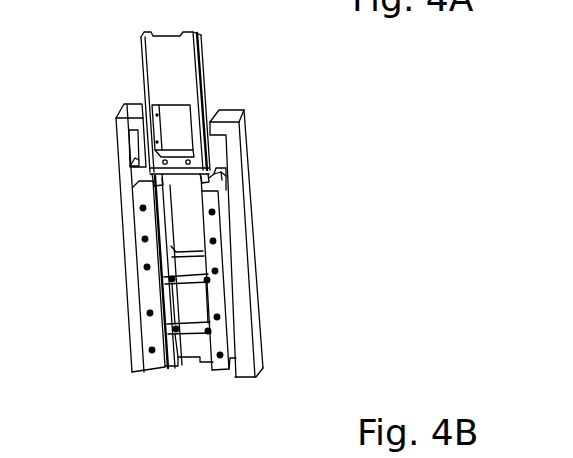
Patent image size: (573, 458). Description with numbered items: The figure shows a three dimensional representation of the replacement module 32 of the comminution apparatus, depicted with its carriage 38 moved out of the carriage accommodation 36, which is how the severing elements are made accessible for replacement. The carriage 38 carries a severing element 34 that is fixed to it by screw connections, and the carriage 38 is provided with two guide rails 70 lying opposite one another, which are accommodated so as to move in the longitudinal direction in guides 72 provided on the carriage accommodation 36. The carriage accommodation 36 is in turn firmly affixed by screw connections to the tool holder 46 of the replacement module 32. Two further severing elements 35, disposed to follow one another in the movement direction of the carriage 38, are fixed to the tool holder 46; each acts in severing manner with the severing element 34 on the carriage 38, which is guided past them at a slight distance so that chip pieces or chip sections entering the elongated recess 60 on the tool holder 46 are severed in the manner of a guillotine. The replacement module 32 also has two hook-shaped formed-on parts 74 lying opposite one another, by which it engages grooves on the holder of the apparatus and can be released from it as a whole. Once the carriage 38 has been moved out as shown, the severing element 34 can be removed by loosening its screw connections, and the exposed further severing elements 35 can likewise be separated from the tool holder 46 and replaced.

The replacement module 32 is at (260, 381).
The severing element 34 is at (172, 106).
The further severing elements 35 is at (198, 280).
The carriage accommodation 36 is at (221, 187).
The carriage 38 is at (207, 0).
The tool holder 46 is at (115, 120).
The elongated recess 60 is at (197, 300).
The guide rails 70 is at (201, 39).
The guides 72 is at (140, 189).
The hook-shaped formed-on parts 74 is at (128, 102).